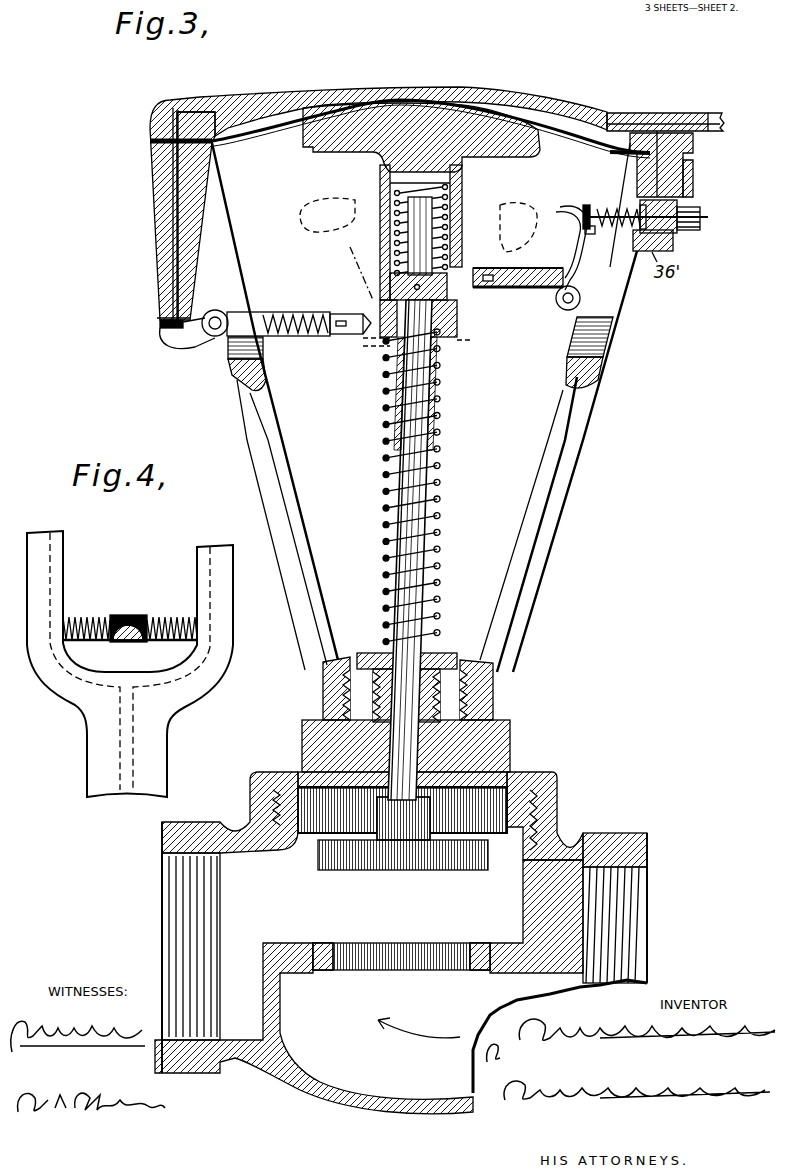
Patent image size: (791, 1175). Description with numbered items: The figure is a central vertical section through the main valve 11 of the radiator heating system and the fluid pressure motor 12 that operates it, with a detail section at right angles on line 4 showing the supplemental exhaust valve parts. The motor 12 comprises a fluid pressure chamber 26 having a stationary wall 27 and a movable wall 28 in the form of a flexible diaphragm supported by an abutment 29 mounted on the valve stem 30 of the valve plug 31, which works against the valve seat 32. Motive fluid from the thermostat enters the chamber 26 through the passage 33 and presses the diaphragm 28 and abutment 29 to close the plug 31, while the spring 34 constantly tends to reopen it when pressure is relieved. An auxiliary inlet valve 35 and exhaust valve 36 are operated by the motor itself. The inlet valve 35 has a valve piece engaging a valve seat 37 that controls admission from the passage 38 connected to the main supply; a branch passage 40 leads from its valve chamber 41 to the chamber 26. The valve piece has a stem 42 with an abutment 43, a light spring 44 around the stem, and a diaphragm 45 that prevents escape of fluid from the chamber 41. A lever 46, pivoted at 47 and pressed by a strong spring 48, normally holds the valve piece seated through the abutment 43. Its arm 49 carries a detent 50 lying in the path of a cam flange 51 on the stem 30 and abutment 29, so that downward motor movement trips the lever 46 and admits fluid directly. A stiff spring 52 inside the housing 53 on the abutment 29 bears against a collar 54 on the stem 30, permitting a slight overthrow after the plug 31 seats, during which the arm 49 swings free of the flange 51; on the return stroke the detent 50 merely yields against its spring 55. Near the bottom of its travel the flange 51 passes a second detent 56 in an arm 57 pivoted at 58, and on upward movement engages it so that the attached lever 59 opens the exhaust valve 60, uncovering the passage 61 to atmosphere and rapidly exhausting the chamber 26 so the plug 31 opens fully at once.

In FIG. 3, the section line 4 is at (270, 292).
In FIG. 3, the main valve 11 is at (576, 766).
In FIG. 3, the fluid pressure motor 12 is at (665, 64).
In FIG. 3, the fluid pressure chamber 26 is at (577, 127).
In FIG. 3, the stationary wall 27 is at (312, 97).
In FIG. 3, the movable wall 28 is at (563, 125).
In FIG. 3, the abutment 29 is at (318, 128).
In FIG. 3, the valve stem 30 is at (420, 418).
In FIG. 3, the valve plug 31 is at (377, 868).
In FIG. 3, the valve seat 32 is at (475, 943).
In FIG. 3, the passage 33 is at (690, 113).
In FIG. 3, the spring 34 is at (434, 504).
In FIG. 3, the inlet valve 35 is at (710, 260).
In FIG. 3, the exhaust valve 36 is at (155, 341).
In FIG. 3, the valve seat 37 is at (683, 200).
In FIG. 3, the passage 38 is at (700, 219).
In FIG. 3, the branch passage 40 is at (663, 147).
In FIG. 3, the valve chamber 41 is at (683, 187).
In FIG. 3, the stem 42 is at (607, 215).
In FIG. 3, the abutment 43 is at (587, 234).
In FIG. 3, the spring 44 is at (615, 262).
In FIG. 3, the diaphragm 45 is at (632, 270).
In FIG. 3, the lever 46 is at (569, 237).
In FIG. 3, the pivot 47 is at (560, 303).
In FIG. 3, the spring 48 is at (573, 325).
In FIG. 3, the arm 49 is at (500, 289).
In FIG. 3, the detent 50 is at (478, 260).
In FIG. 3, the flange 51 is at (363, 258).
In FIG. 3, the spring 52 is at (462, 190).
In FIG. 3, the housing 53 is at (381, 213).
In FIG. 3, the collar 54 is at (388, 297).
In FIG. 3, the spring 55 is at (522, 287).
In FIG. 3, the detent 56 is at (363, 340).
In FIG. 3, the arm 57 is at (263, 312).
In FIG. 4, the arm 57 is at (136, 615).
In FIG. 3, the pivot 58 is at (218, 337).
In FIG. 4, the pivot 58 is at (95, 614).
In FIG. 3, the lever 59 is at (177, 343).
In FIG. 3, the exhaust valve 60 is at (160, 323).
In FIG. 3, the passage 61 is at (167, 230).